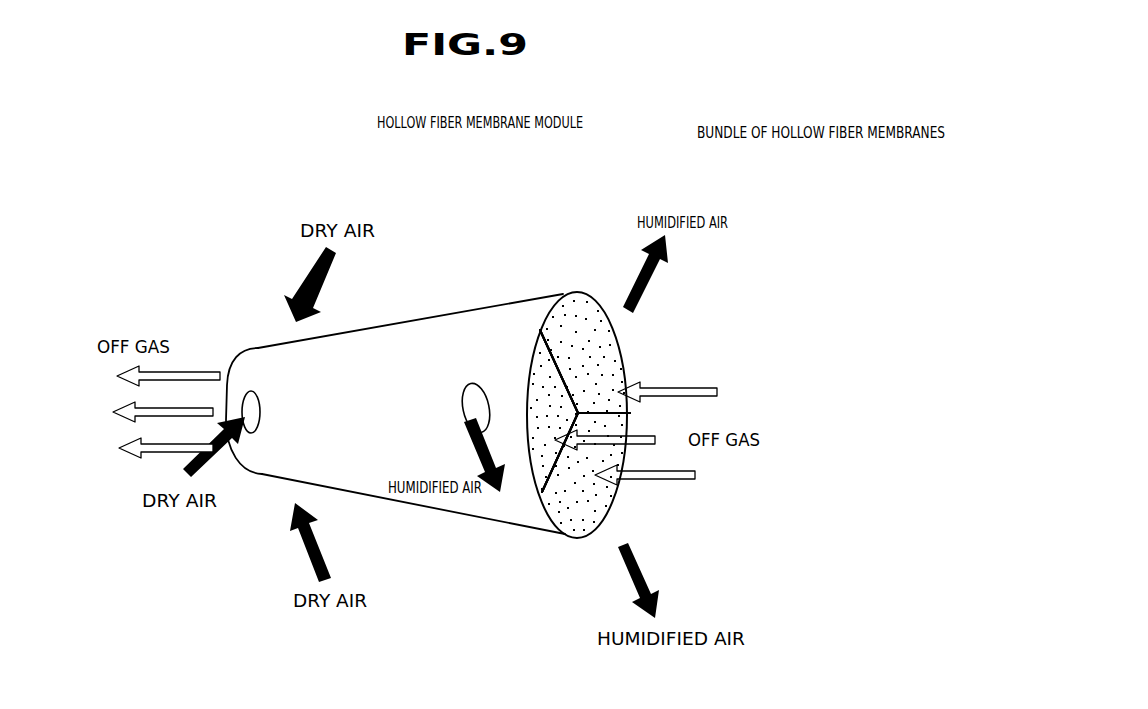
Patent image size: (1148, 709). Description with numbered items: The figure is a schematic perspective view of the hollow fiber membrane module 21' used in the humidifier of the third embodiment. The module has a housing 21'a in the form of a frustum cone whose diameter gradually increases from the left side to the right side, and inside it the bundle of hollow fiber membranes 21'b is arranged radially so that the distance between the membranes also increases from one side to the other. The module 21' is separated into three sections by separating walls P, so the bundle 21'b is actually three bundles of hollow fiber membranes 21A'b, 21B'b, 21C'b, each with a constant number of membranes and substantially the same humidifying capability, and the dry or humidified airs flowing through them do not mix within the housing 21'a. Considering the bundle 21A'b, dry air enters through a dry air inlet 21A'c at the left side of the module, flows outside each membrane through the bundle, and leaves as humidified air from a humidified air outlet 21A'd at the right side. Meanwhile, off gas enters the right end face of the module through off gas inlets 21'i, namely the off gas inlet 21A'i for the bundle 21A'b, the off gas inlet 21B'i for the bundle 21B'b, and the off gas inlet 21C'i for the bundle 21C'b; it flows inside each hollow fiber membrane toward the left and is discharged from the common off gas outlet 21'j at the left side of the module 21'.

The hollow fiber membrane module 21' is at (485, 381).
The housing 21'a is at (411, 395).
The bundle of hollow fiber membranes 21'b is at (620, 386).
The off gas outlet 21'j is at (216, 370).
The dry air inlet 21A'c is at (282, 398).
The humidified air outlet 21A'd is at (450, 386).
The bundle of hollow fiber membranes 21A'b is at (571, 289).
The bundle of hollow fiber membranes 21B'b is at (636, 289).
The bundle of hollow fiber membranes 21C'b is at (670, 329).
The off gas inlet 21A'i is at (509, 491).
The off gas inlet 21B'i is at (670, 371).
The off gas inlet 21C'i is at (659, 476).
The off gas inlet 21'i is at (620, 409).
The separating wall P is at (553, 480).